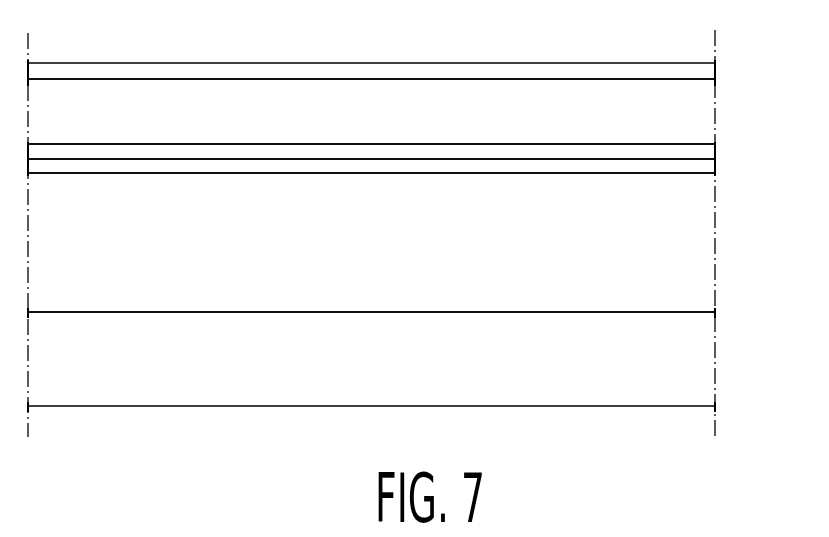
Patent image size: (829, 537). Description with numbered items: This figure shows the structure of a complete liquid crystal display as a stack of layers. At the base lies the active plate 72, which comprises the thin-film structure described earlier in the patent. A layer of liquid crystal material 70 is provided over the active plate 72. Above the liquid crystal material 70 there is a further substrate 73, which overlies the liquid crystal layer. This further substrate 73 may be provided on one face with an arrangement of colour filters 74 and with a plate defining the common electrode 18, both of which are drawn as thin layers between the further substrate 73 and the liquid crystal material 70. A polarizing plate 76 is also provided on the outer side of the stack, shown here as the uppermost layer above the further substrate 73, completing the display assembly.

The polarizing plate 76 is at (717, 66).
The further substrate 73 is at (711, 115).
The colour filters 74 is at (718, 148).
The common electrode 18 is at (718, 172).
The layer of liquid crystal material 70 is at (711, 242).
The active plate 72 is at (731, 314).